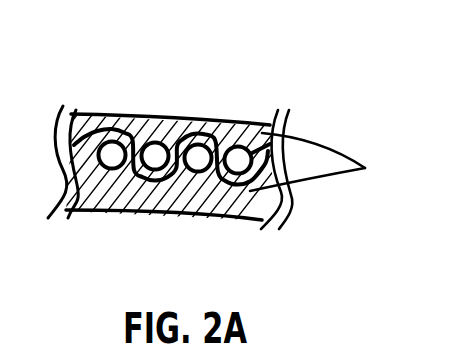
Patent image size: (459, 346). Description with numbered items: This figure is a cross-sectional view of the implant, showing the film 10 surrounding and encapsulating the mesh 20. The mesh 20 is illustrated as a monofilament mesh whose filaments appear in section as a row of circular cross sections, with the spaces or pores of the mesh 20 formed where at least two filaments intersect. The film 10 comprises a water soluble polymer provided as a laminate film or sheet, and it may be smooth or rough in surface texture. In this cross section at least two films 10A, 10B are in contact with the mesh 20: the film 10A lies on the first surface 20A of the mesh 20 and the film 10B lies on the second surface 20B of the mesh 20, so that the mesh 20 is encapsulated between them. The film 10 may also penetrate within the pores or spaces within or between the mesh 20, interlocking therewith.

The film 10 is at (319, 162).
The film 10A is at (152, 133).
The film 10B is at (224, 200).
The mesh 20 is at (88, 163).
The first surface of the mesh 20A is at (202, 126).
The second surface of the mesh 20B is at (143, 192).